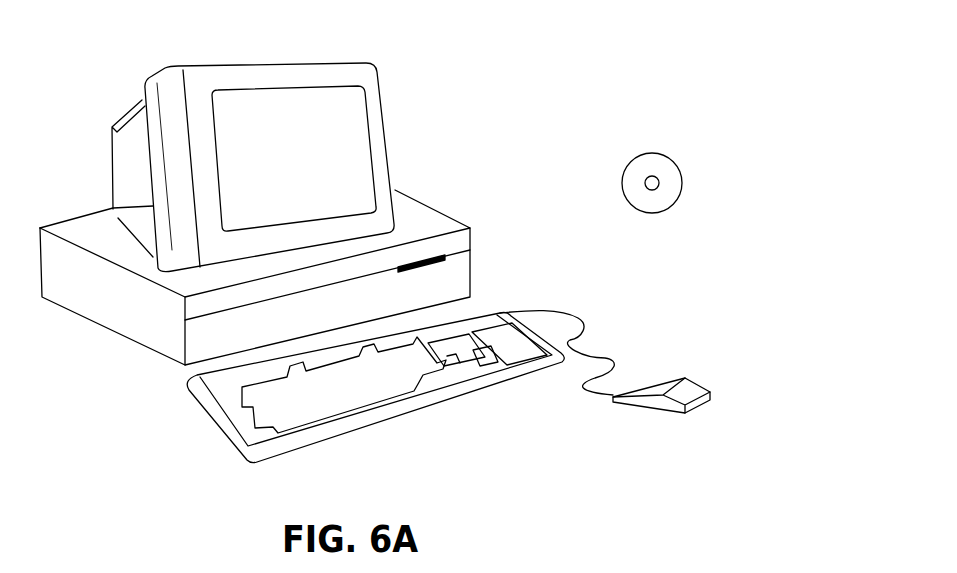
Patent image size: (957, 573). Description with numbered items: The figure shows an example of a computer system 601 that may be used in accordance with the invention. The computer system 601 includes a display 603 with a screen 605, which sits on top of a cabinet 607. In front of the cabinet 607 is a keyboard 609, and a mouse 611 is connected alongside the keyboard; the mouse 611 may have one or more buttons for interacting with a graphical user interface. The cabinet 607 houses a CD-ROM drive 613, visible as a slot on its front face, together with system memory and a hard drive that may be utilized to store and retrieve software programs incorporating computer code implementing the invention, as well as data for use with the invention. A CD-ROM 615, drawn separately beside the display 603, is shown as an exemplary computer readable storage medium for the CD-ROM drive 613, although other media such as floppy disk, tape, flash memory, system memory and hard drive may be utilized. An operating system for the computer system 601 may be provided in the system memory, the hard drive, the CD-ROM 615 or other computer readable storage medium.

The computer system 601 is at (573, 46).
The display 603 is at (393, 163).
The screen 605 is at (353, 123).
The cabinet 607 is at (148, 352).
The keyboard 609 is at (382, 422).
The mouse 611 is at (697, 382).
The CD-ROM drive 613 is at (445, 252).
The CD-ROM 615 is at (667, 157).